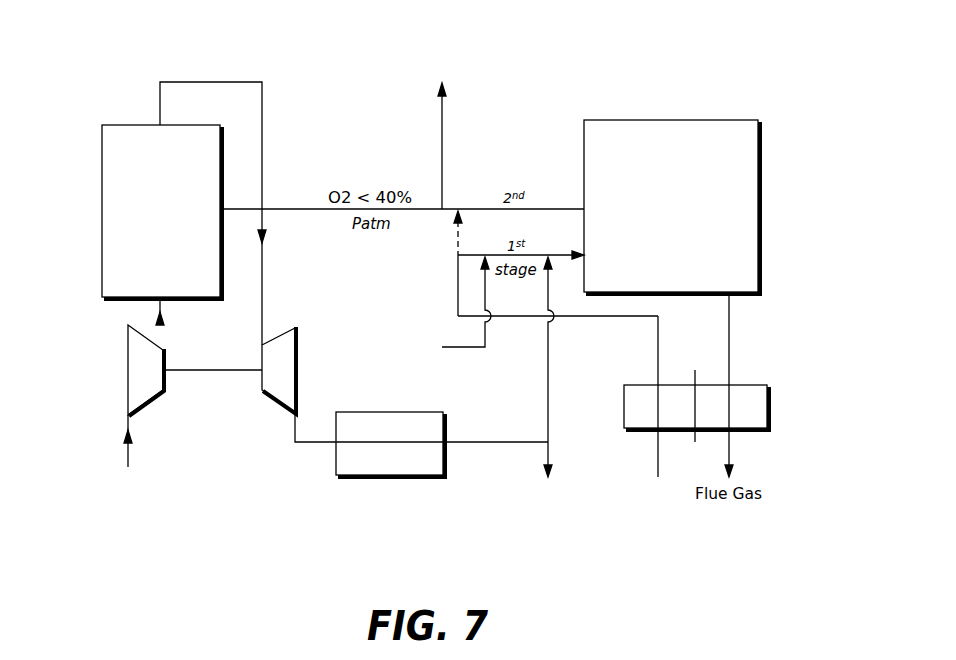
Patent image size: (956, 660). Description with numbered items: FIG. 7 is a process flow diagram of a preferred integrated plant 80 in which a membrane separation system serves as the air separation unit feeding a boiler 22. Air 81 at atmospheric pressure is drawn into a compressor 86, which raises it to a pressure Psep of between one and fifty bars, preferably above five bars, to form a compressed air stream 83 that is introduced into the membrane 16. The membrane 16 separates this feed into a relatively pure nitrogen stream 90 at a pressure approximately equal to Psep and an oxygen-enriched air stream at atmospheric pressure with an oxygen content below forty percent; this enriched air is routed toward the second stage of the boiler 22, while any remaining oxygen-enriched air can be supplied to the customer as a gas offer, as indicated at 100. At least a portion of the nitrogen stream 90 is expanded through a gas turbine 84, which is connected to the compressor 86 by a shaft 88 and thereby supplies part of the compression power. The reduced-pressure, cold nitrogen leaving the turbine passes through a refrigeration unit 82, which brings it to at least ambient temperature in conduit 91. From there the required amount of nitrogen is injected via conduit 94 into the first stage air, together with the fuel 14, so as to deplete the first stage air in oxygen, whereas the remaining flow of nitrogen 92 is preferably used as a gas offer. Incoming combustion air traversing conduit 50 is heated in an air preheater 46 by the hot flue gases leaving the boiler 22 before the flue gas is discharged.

The integrated plant 80 is at (640, 18).
The membrane 16 is at (100, 183).
The nitrogen stream 90 is at (262, 118).
The oxygen-enriched air gas offer 100 is at (442, 155).
The fuel 14 is at (450, 347).
The nitrogen injection conduit 94 is at (548, 353).
The remaining nitrogen flow 92 is at (548, 453).
The boiler 22 is at (758, 168).
The air preheater 46 is at (745, 428).
The incoming air conduit 50 is at (658, 463).
The compressor 86 is at (128, 352).
The compressed air stream 83 is at (162, 305).
The air 81 is at (128, 421).
The shaft 88 is at (208, 372).
The gas turbine 84 is at (294, 329).
The nitrogen conduit 91 is at (462, 442).
The refrigeration unit 82 is at (420, 412).